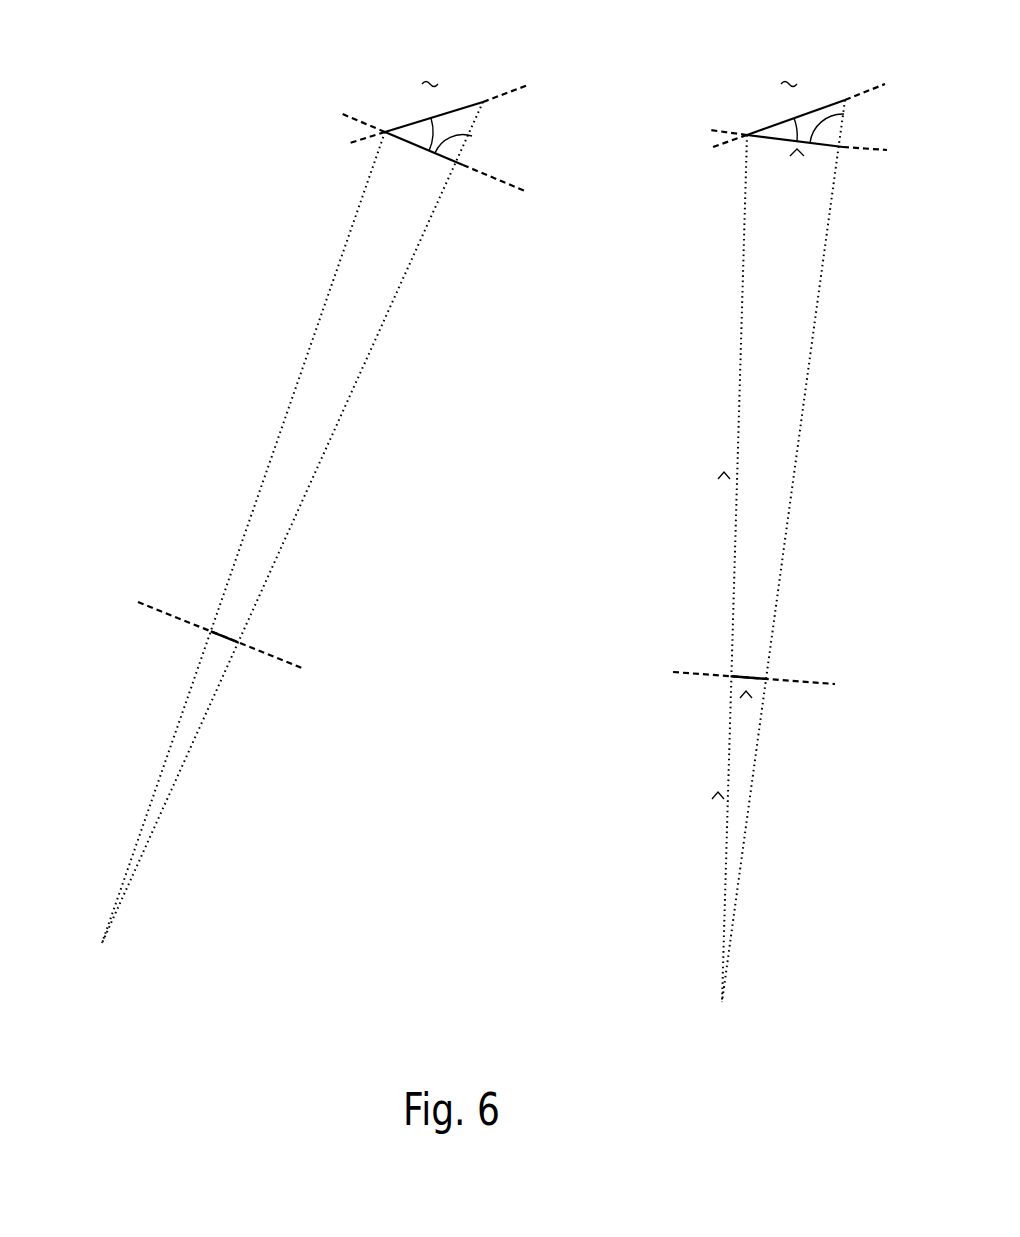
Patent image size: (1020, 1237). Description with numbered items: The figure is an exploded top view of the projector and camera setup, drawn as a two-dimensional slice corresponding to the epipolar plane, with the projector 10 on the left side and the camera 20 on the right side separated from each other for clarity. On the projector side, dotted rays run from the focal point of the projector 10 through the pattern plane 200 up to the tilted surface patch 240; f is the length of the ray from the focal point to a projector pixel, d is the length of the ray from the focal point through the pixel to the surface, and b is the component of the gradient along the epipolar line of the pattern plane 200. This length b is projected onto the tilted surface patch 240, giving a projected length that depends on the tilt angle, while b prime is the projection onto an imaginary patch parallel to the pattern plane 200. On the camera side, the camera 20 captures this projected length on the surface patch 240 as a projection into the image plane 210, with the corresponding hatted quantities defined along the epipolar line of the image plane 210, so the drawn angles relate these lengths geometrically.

The surface patch 240 is at (613, 95).
The pattern plane 200 is at (136, 601).
The projector 10 is at (256, 543).
The image plane 210 is at (833, 685).
The camera 20 is at (694, 551).